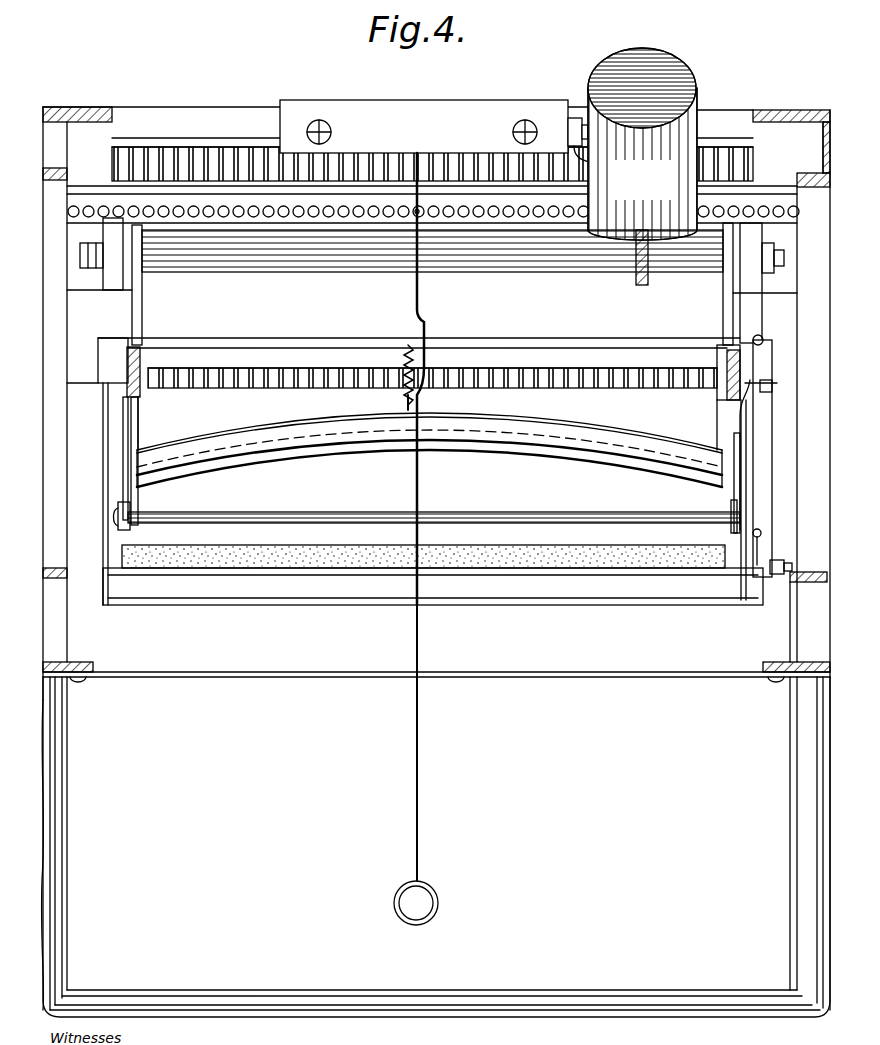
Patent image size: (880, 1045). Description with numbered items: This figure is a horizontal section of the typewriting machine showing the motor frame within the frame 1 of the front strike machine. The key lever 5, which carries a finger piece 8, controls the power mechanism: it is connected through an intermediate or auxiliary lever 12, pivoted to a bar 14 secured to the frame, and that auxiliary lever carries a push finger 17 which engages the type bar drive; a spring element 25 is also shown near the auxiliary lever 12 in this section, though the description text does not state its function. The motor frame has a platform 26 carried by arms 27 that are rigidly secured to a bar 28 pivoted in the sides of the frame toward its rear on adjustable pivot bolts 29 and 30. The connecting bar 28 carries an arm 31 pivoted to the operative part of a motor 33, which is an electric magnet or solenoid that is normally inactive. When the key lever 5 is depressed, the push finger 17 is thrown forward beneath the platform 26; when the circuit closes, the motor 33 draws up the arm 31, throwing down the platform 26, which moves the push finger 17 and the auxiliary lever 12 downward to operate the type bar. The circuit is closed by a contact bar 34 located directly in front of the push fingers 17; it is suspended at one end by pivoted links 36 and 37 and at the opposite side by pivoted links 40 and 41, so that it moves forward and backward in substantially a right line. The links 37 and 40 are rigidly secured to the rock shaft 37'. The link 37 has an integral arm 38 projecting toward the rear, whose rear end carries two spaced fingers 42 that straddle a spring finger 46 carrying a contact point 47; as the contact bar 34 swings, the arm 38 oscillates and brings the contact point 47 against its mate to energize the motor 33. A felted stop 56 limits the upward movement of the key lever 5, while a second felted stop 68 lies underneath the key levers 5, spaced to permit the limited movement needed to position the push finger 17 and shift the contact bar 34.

The frame 1 is at (67, 792).
The key lever 5 is at (419, 642).
The finger piece 8 is at (422, 903).
The intermediate or auxiliary lever 12 is at (432, 332).
The bar 14 is at (617, 380).
The push finger 17 is at (406, 400).
The spring 25 is at (408, 348).
The platform 26 is at (495, 415).
The arms 27 is at (142, 323).
The bar 28 is at (357, 262).
The adjustable pivot bolt 29 is at (86, 260).
The adjustable pivot bolt 30 is at (775, 270).
The arm 31 is at (640, 270).
The motor 33 is at (642, 144).
The contact bar 34 is at (510, 443).
The pivoted link 36 is at (740, 462).
The link 37 is at (708, 510).
The rock shaft 37' is at (434, 508).
The arm 38 is at (742, 423).
The pivoted link 40 is at (140, 505).
The pivoted link 41 is at (123, 462).
The spaced fingers 42 is at (772, 390).
The spring finger 46 is at (762, 366).
The contact point 47 is at (762, 336).
The felted stop 56 is at (340, 592).
The felted stop 68 is at (325, 550).